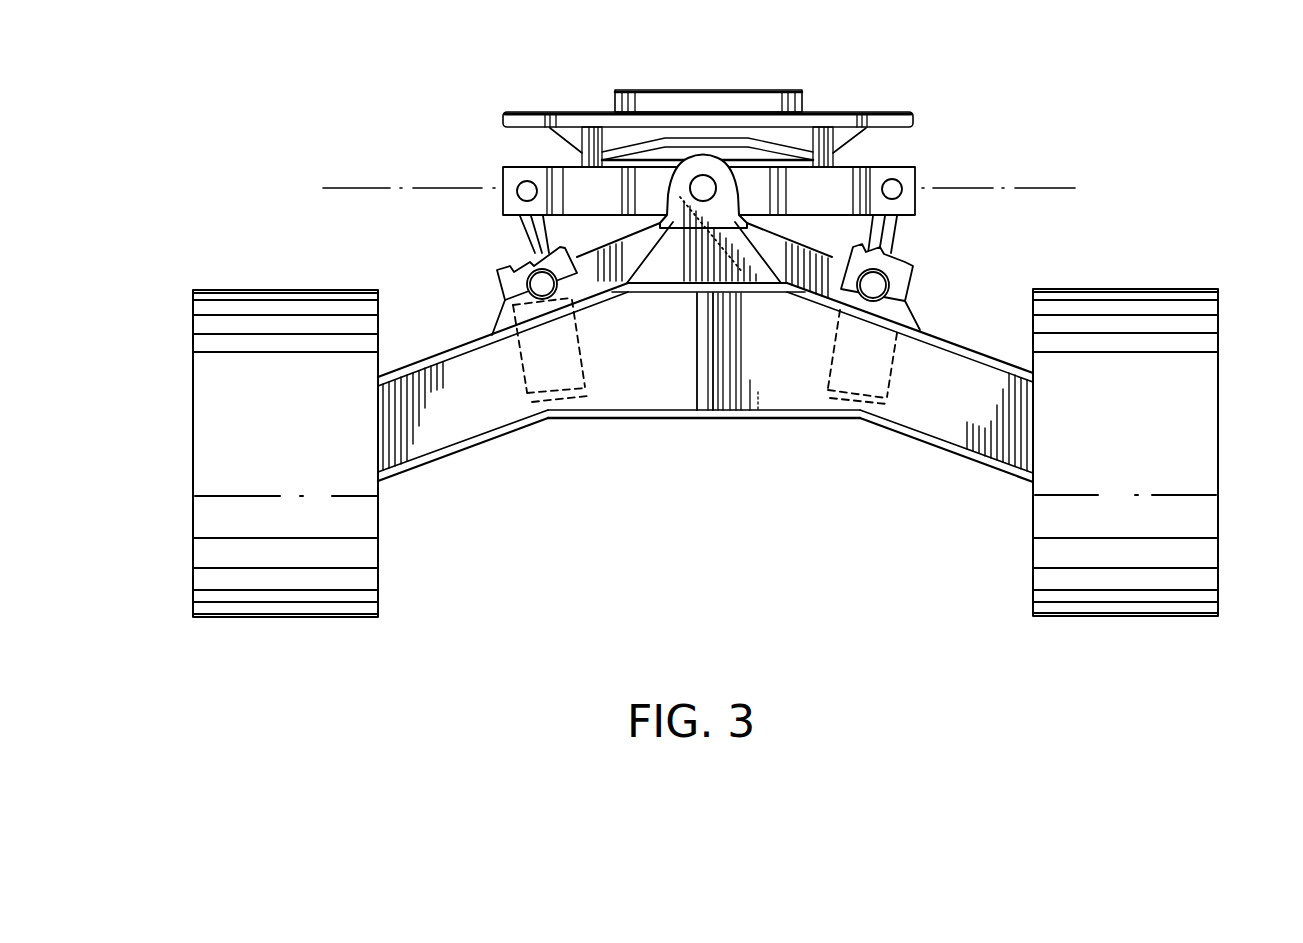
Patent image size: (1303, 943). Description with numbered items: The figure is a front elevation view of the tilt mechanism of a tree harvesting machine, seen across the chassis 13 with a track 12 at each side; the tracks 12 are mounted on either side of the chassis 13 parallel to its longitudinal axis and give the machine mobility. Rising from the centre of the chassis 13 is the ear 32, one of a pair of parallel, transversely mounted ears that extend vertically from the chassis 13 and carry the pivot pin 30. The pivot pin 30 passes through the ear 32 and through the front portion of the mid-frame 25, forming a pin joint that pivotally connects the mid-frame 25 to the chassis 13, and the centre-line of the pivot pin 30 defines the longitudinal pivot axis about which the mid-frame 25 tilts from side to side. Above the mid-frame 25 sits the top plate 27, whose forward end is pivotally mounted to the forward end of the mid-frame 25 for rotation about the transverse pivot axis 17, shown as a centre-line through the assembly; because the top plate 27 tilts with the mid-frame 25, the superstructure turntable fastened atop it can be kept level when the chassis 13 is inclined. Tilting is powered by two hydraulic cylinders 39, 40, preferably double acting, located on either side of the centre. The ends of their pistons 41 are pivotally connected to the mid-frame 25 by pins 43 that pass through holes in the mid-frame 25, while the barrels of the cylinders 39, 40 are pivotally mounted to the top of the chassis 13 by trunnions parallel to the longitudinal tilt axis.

The tracks 12 is at (290, 290).
The chassis 13 is at (795, 380).
The transverse pivot axis 17 is at (1042, 187).
The mid-frame 25 is at (893, 152).
The top plate 27 is at (857, 112).
The pivot pin 30 is at (703, 186).
The ear 32 is at (681, 263).
The hydraulic cylinder 39 is at (908, 316).
The hydraulic cylinder 40 is at (551, 373).
The pistons 41 is at (522, 232).
The pins 43 is at (520, 193).